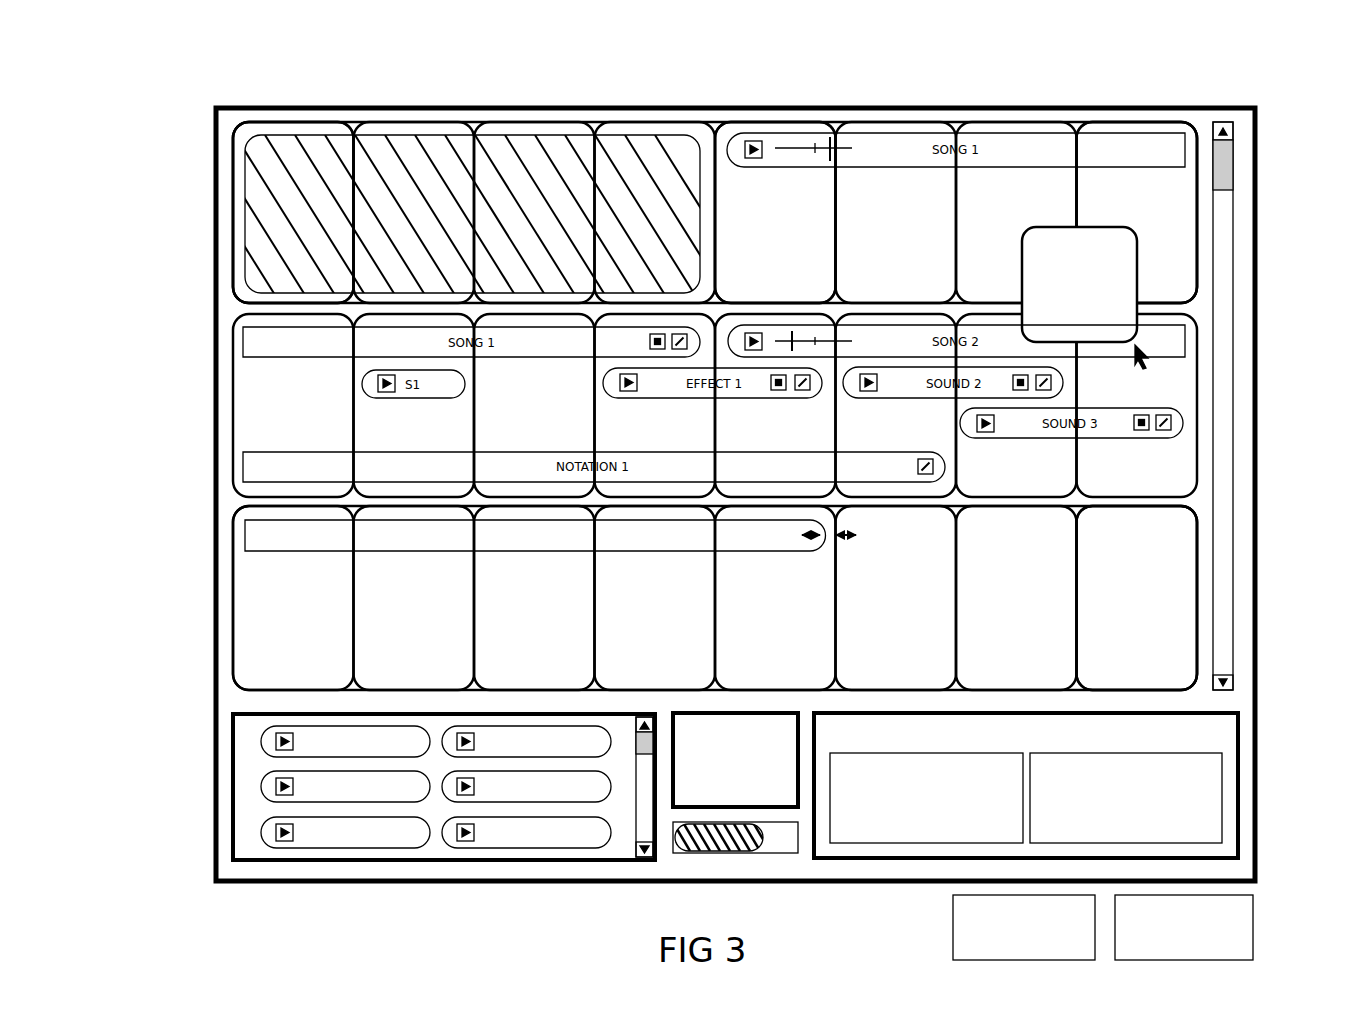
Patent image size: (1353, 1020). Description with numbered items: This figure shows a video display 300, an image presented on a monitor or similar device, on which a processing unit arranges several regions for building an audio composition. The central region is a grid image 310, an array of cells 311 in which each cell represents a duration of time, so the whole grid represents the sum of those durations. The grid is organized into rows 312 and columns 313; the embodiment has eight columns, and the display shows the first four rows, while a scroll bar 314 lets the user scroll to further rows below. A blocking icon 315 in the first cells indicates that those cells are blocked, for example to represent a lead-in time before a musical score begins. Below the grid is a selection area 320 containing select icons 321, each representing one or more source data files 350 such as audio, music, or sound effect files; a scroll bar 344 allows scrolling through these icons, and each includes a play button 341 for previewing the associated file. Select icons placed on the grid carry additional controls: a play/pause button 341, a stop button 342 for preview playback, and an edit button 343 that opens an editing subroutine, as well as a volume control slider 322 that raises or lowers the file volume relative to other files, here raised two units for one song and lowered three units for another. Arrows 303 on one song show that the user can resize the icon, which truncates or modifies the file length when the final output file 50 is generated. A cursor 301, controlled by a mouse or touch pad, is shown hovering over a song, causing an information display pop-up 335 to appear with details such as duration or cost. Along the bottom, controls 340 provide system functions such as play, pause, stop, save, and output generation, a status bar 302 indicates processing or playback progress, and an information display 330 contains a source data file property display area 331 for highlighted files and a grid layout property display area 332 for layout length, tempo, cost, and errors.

The video display 300 is at (152, 96).
The grid image 310 is at (232, 122).
The rows 312 is at (195, 213).
The columns 313 is at (292, 98).
The cells 311 is at (956, 406).
The blocking icon 315 is at (510, 150).
The play button 341 is at (750, 138).
The volume control slider 322 is at (843, 132).
The information display pop-up 335 is at (1079, 284).
The cursor 301 is at (1146, 352).
The stop button 342 is at (1150, 436).
The edit button 343 is at (1178, 426).
The arrows 303 is at (862, 546).
The scroll bar 314 is at (1222, 398).
The selection area 320 is at (381, 826).
The select icons 321 is at (403, 840).
The scroll bar 344 is at (640, 826).
The controls 340 is at (735, 760).
The status bar 302 is at (740, 853).
The information display 330 is at (1080, 783).
The grid layout property display area 332 is at (926, 798).
The source data file property display area 331 is at (1126, 798).
The source data file 350 is at (1024, 927).
The final output file 50 is at (1184, 927).